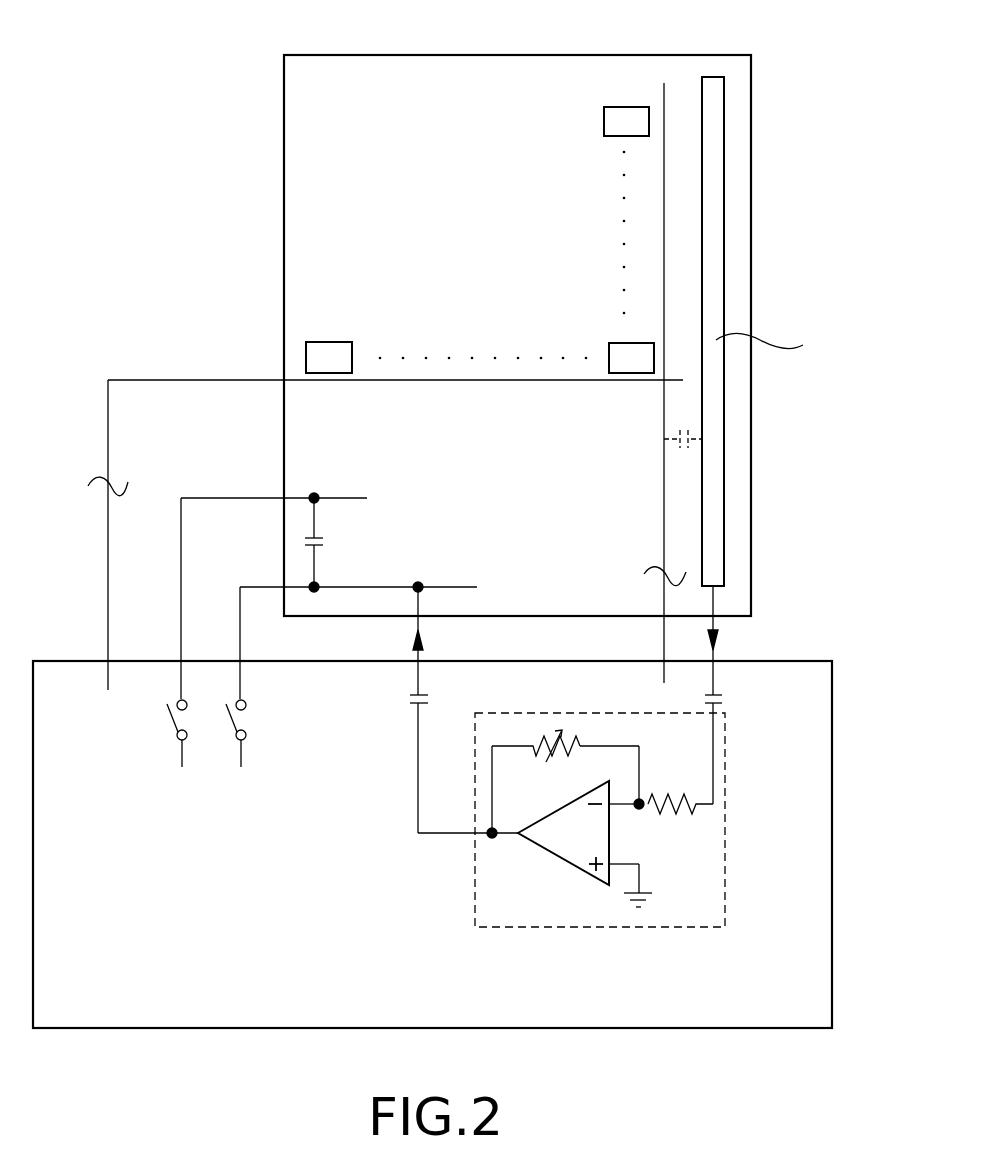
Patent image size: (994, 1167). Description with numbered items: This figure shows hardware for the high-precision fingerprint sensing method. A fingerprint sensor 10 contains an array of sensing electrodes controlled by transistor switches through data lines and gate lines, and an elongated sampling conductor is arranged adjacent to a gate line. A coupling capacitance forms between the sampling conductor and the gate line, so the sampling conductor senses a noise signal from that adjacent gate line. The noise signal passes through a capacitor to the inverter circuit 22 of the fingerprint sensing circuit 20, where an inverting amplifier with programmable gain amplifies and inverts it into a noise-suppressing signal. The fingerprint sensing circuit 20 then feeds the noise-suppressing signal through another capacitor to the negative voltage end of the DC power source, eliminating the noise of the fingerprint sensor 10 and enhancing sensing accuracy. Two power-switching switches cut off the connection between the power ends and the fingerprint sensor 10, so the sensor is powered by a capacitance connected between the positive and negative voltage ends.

The fingerprint sensor 10 is at (510, 66).
The fingerprint sensing circuit 20 is at (171, 1025).
The inverter circuit 22 is at (597, 918).